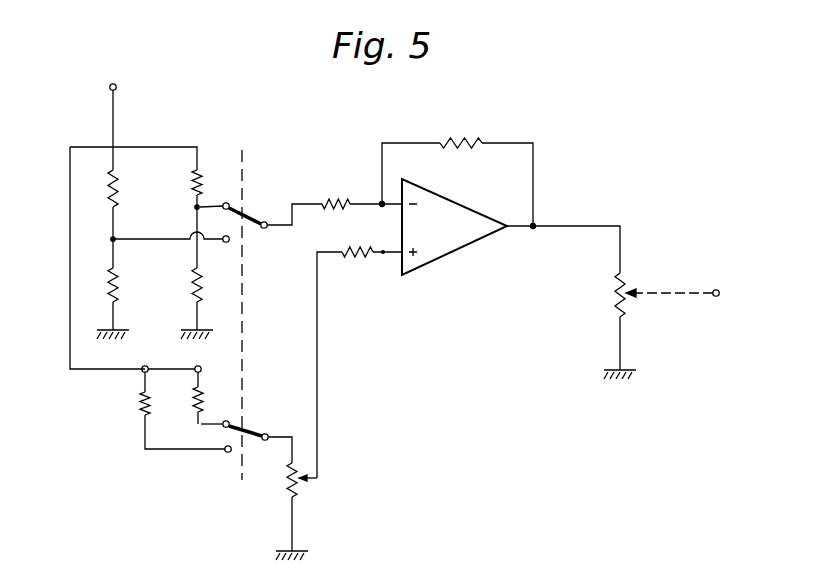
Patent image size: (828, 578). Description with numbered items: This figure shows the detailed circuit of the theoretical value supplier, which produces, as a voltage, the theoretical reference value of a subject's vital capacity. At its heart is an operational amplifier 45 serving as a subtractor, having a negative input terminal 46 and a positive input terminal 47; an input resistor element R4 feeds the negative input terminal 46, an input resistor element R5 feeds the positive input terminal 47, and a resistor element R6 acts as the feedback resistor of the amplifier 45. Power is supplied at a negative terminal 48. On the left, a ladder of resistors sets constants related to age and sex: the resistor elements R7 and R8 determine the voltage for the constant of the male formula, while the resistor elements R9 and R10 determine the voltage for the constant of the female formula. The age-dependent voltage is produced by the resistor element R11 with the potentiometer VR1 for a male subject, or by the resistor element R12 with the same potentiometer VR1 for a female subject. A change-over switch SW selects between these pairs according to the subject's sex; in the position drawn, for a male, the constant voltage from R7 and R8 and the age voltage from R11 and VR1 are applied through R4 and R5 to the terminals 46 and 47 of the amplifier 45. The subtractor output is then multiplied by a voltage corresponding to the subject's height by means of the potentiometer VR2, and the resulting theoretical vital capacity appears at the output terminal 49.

The operational amplifier 45 is at (452, 256).
The negative input terminal 46 is at (385, 208).
The positive input terminal 47 is at (384, 256).
The negative terminal for power supply 48 is at (116, 86).
The output terminal 49 is at (714, 287).
The resistor element R4 is at (333, 197).
The resistor element R5 is at (347, 258).
The resistor element R6 is at (458, 140).
The resistor element R7 is at (109, 196).
The resistor element R8 is at (108, 283).
The resistor element R9 is at (193, 185).
The resistor element R10 is at (193, 283).
The resistor element R11 is at (194, 396).
The resistor element R12 is at (140, 407).
The potentiometer VR1 is at (290, 480).
The potentiometer VR2 is at (617, 289).
The change-over switch SW is at (252, 422).